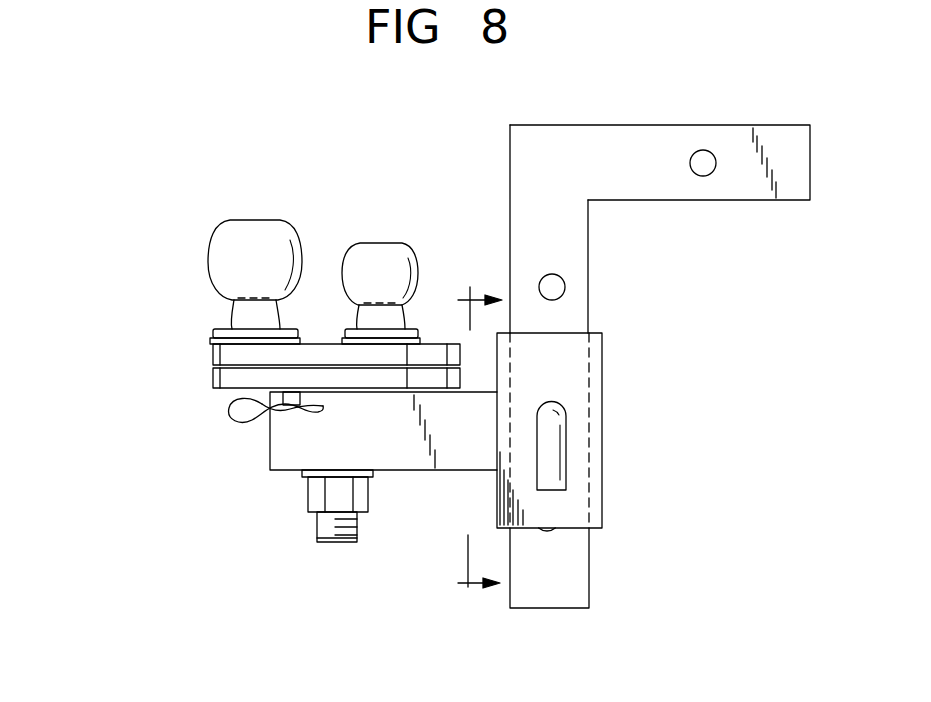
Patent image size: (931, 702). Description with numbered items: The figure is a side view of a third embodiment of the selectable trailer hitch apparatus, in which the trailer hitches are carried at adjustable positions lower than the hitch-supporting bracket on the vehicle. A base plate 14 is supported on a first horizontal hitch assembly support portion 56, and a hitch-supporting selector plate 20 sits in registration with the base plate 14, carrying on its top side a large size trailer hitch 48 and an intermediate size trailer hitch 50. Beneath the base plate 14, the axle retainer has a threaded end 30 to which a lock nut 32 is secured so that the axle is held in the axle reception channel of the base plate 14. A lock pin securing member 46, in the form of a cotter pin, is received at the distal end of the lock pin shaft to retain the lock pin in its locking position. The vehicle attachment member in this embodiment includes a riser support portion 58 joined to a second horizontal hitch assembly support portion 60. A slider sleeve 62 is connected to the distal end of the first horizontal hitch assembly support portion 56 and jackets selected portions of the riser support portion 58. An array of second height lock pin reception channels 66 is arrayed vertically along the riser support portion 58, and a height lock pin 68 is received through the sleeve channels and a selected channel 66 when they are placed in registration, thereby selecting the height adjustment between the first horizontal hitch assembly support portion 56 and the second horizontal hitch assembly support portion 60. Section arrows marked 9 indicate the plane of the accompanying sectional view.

The section line 9- 9 is at (474, 444).
The base plate 14 is at (213, 382).
The hitch-supporting selector plate 20 is at (208, 355).
The threaded end 30 is at (332, 538).
The lock nut 32 is at (318, 492).
The lock pin securing member 46 is at (227, 420).
The large size trailer hitch 48 is at (222, 250).
The intermediate size trailer hitch 50 is at (385, 247).
The first horizontal hitch assembly support portion 56 is at (454, 450).
The riser support portion 58 is at (573, 310).
The second horizontal hitch assembly support portion 60 is at (660, 182).
The slider sleeve 62 is at (565, 363).
The second height lock pin reception channels 66 is at (560, 283).
The height lock pin 68 is at (557, 450).